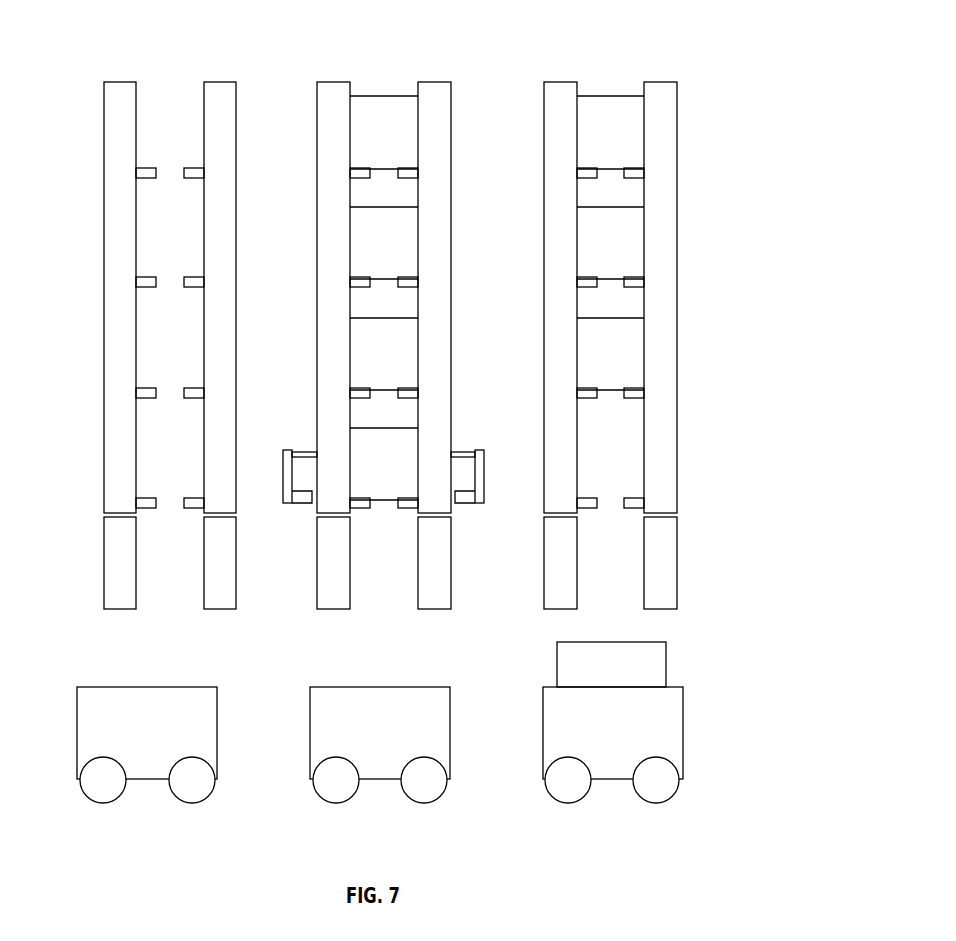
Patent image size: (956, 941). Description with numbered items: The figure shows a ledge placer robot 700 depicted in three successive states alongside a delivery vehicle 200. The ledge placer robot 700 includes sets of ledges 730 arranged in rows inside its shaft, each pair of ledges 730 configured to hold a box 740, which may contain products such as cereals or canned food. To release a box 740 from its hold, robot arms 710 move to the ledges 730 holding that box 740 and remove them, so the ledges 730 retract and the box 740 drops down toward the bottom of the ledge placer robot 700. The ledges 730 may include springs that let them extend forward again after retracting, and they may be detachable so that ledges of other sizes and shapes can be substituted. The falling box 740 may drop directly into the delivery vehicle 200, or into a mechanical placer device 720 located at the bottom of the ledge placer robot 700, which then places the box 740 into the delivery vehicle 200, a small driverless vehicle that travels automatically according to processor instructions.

The ledge placer robot 700 is at (652, 35).
The robot arms 710 is at (315, 457).
The mechanical placer device 720 is at (104, 562).
The ledges 730 is at (143, 278).
The box 740 is at (508, 391).
The delivery vehicle 200 is at (380, 745).